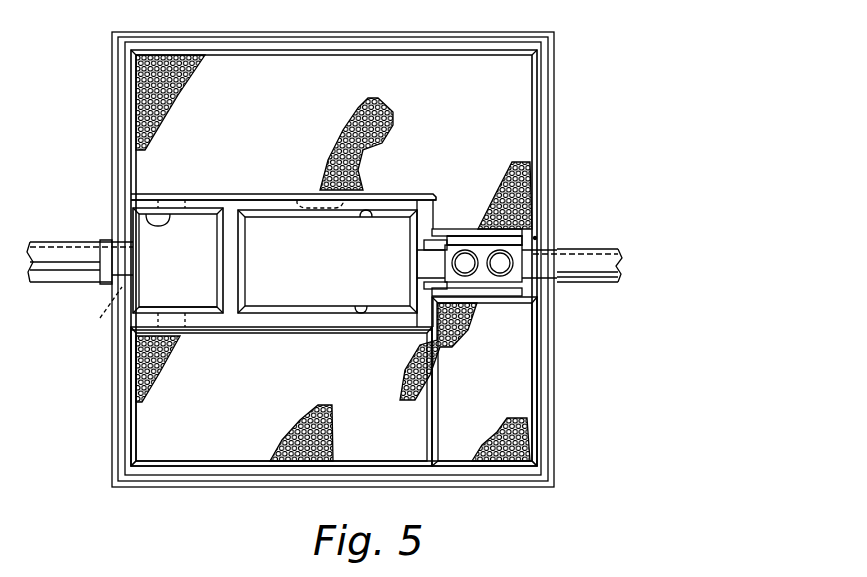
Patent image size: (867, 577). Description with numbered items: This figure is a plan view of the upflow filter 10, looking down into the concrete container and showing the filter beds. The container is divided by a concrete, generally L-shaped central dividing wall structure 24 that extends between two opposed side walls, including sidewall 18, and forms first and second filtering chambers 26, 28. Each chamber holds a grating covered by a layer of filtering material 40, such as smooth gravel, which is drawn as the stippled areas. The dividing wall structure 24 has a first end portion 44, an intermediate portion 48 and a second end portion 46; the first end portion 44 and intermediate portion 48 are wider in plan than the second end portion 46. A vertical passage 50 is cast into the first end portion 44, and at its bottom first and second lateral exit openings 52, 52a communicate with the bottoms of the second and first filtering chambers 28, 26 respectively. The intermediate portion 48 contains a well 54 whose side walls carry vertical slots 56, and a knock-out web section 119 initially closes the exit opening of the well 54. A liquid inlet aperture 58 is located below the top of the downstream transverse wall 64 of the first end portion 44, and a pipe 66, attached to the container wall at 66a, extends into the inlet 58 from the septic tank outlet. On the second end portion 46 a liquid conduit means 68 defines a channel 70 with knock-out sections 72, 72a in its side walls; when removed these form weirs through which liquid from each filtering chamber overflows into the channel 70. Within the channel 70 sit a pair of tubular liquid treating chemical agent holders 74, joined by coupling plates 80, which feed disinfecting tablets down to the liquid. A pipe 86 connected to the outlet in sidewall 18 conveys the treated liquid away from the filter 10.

The upflow filter 10 is at (364, 259).
The sidewall 18 is at (555, 95).
The central dividing wall structure 24 is at (256, 194).
The first filtering chamber 26 is at (437, 440).
The second filtering chamber 28 is at (405, 75).
The layer of filtering material 40 is at (450, 335).
The first end portion 44 is at (205, 325).
The second end portion 46 is at (533, 215).
The intermediate portion 48 is at (288, 325).
The vertical passage 50 is at (168, 194).
The first lateral exit opening 52 is at (180, 218).
The second lateral exit opening 52a is at (165, 306).
The well 54 is at (395, 228).
The vertical slots 56 is at (370, 208).
The liquid inlet aperture 58 is at (101, 309).
The downstream transverse wall 64 is at (235, 263).
The pipe 66 is at (66, 280).
The pipe attachment 66a is at (110, 240).
The liquid conduit means 68 is at (512, 300).
The channel 70 is at (530, 266).
The knock-out section 72 is at (447, 232).
The knock-out section 72a is at (535, 238).
The liquid treating chemical agent holders 74 is at (472, 276).
The coupling plates 80 is at (482, 248).
The pipe 86 is at (610, 285).
The knock-out web section 119 is at (305, 194).